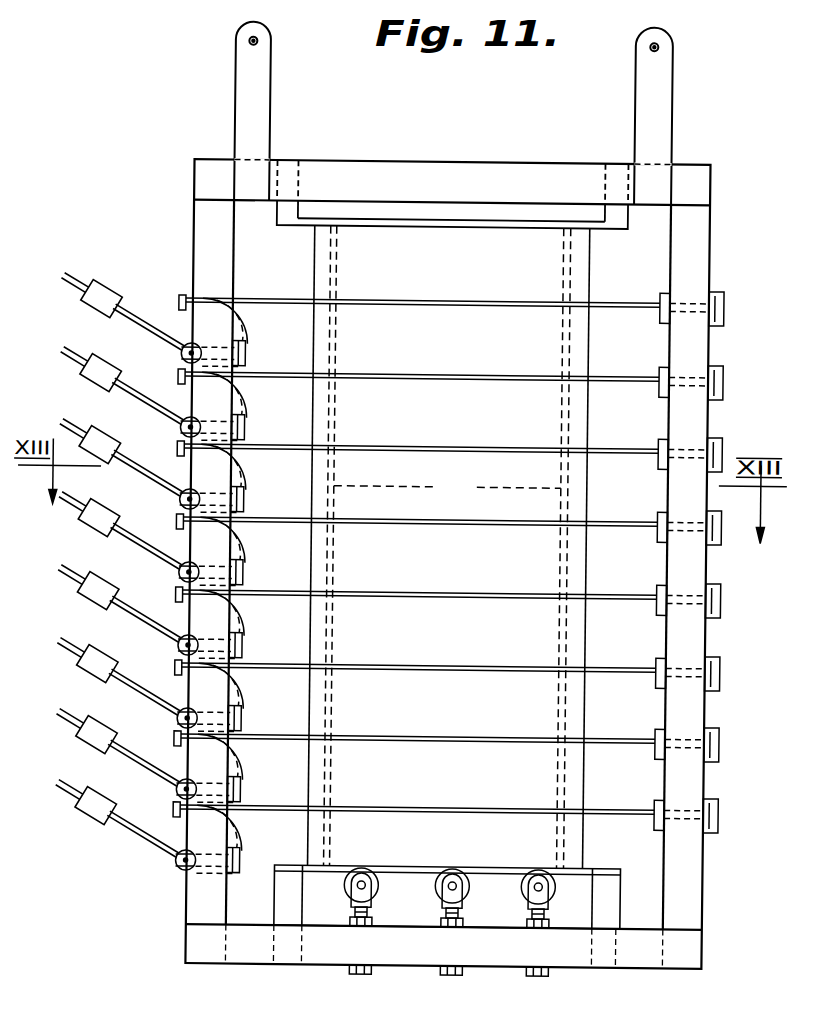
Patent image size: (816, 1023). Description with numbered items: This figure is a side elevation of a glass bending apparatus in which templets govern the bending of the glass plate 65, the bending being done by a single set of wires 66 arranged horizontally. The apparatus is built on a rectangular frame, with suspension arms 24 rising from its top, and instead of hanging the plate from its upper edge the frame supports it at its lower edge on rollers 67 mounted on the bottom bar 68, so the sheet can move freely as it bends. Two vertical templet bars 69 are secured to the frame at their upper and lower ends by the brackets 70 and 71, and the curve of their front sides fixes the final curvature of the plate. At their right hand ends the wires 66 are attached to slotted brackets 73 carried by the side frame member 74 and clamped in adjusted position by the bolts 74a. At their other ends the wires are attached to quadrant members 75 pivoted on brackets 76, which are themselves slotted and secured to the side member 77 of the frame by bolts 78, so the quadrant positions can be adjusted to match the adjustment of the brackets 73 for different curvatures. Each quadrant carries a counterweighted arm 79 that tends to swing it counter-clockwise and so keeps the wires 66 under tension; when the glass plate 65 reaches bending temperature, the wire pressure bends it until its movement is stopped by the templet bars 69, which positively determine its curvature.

The suspension arm 24 is at (284, 113).
The glass plate 65 is at (466, 575).
The wires 66 is at (446, 599).
The rollers 67 is at (439, 887).
The bottom bar 68 is at (427, 948).
The vertical templet bars 69 is at (447, 547).
The brackets 70 is at (611, 218).
The brackets 71 is at (294, 916).
The brackets 73 is at (713, 371).
The side frame member 74 is at (696, 280).
The bolts 74a is at (716, 381).
The quadrant members 75 is at (243, 339).
The brackets 76 is at (178, 431).
The side member 77 is at (208, 238).
The bolts 78 is at (238, 843).
The counterweighted arms 79 is at (128, 313).